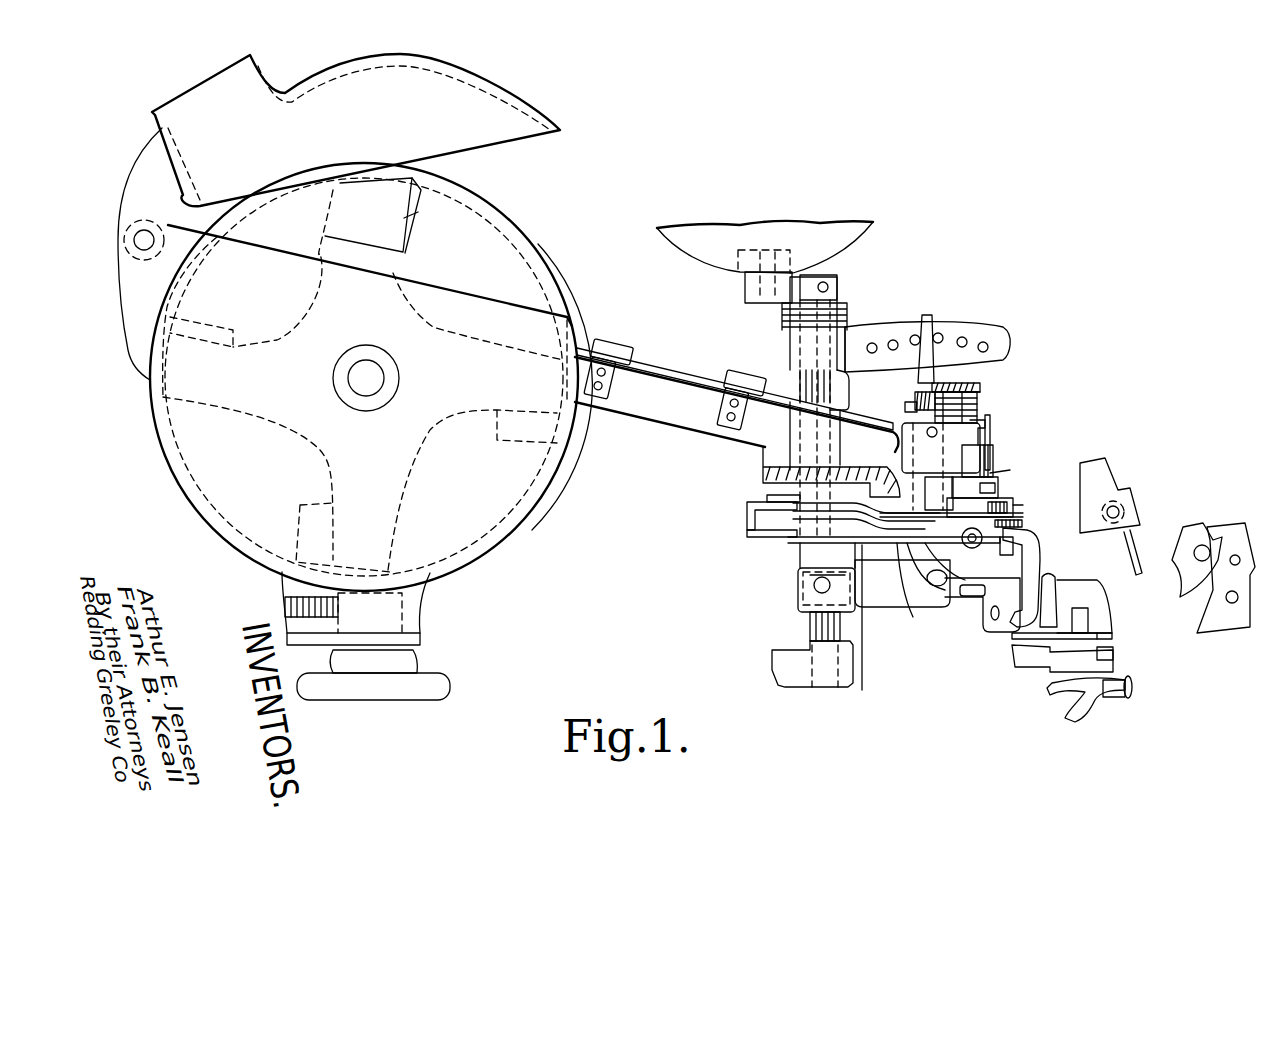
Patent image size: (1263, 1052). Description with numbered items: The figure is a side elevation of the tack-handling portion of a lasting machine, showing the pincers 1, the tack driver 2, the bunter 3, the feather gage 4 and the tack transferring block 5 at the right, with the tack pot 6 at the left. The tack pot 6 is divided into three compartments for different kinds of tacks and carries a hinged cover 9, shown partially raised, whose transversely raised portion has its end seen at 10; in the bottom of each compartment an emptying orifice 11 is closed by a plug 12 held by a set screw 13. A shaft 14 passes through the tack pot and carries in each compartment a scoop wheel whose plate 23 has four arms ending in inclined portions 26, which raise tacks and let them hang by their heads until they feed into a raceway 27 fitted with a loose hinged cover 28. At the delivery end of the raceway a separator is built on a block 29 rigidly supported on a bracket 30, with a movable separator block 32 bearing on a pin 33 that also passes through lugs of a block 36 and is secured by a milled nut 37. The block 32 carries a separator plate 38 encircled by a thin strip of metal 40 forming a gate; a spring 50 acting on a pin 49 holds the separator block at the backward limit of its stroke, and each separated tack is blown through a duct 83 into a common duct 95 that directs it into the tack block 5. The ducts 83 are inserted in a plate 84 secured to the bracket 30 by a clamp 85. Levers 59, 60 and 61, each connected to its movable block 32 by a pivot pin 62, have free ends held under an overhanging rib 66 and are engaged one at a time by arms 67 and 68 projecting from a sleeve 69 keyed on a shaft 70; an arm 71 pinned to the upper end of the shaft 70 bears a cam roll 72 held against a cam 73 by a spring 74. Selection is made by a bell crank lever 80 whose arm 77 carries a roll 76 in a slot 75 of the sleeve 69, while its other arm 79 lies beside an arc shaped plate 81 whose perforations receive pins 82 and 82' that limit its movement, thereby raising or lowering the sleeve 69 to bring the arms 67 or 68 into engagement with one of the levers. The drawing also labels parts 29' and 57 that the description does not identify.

The pincers 1 is at (1245, 580).
The tack driver 2 is at (1140, 535).
The bunter 3 is at (1133, 689).
The feather gage 4 is at (1055, 690).
The tack transferring block 5 is at (1114, 658).
The tack pot 6 is at (215, 470).
The hinged cover 9 is at (500, 130).
The end of transversely raised portion 10 is at (175, 110).
The emptying orifice 11 is at (445, 578).
The plug 12 is at (395, 660).
The set screw 13 is at (283, 608).
The shaft 14 is at (370, 376).
The plate 23 is at (380, 200).
The inclined portions 26 is at (405, 222).
The raceway 27 is at (652, 415).
The hinged cover 28 is at (680, 345).
The block 29 is at (934, 512).
The plate extension 29' is at (1073, 466).
The bracket 30 is at (1024, 525).
The movable separator block 32 is at (975, 492).
The pin 33 is at (960, 385).
The block 36 is at (975, 430).
The milled nut 37 is at (975, 395).
The separator plate 38 is at (990, 455).
The thin strip of metal 40 is at (985, 485).
The pin 49 is at (965, 405).
The spring 50 is at (970, 415).
The pivot 57 is at (970, 545).
The lever 59 is at (795, 510).
The lever 60 is at (800, 516).
The lever 61 is at (820, 523).
The pivot pin 62 is at (1000, 470).
The overhanging rib 66 is at (795, 494).
The arm 67 is at (745, 504).
The arm 68 is at (790, 533).
The sleeve 69 is at (800, 592).
The shaft 70 is at (810, 380).
The arm 71 is at (790, 296).
The cam roll 72 is at (740, 275).
The cam 73 is at (830, 240).
The spring 74 is at (848, 312).
The slot 75 is at (823, 628).
The roll 76 is at (800, 585).
The arm 77 is at (880, 597).
The arm 79 is at (928, 315).
The bell crank lever 80 is at (988, 345).
The arc shaped plate 81 is at (975, 333).
The pin 82 is at (968, 308).
The pin 82' is at (912, 307).
The duct 83 is at (913, 618).
The plate 84 is at (1007, 588).
The clamp 85 is at (1042, 548).
The common duct 95 is at (1112, 637).